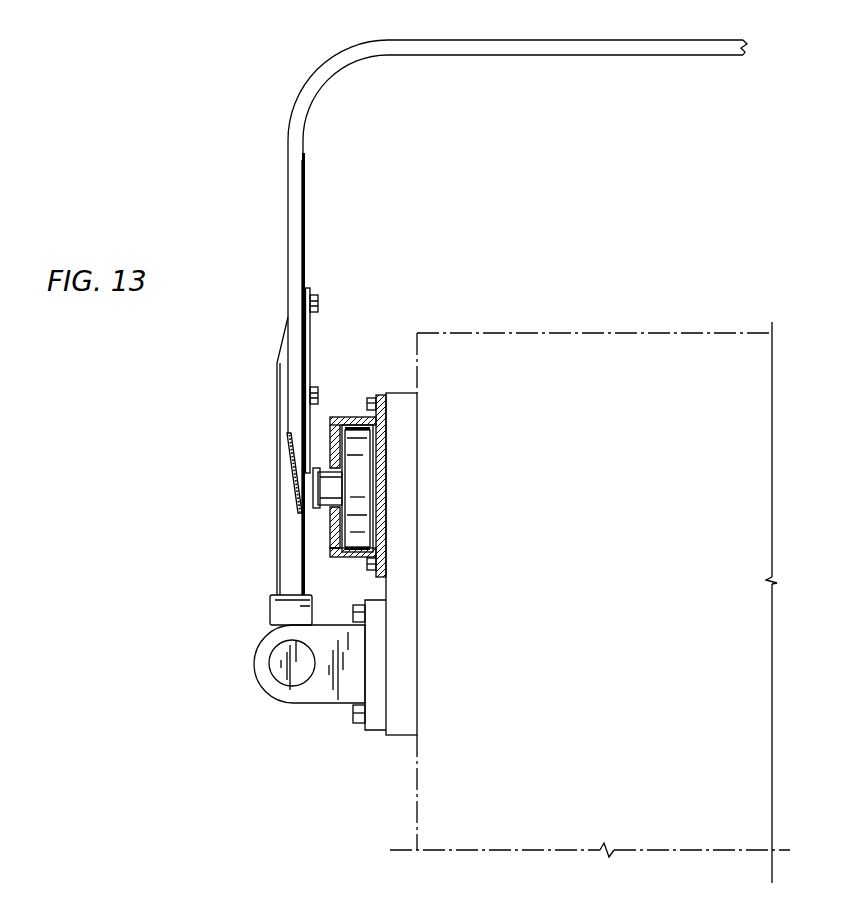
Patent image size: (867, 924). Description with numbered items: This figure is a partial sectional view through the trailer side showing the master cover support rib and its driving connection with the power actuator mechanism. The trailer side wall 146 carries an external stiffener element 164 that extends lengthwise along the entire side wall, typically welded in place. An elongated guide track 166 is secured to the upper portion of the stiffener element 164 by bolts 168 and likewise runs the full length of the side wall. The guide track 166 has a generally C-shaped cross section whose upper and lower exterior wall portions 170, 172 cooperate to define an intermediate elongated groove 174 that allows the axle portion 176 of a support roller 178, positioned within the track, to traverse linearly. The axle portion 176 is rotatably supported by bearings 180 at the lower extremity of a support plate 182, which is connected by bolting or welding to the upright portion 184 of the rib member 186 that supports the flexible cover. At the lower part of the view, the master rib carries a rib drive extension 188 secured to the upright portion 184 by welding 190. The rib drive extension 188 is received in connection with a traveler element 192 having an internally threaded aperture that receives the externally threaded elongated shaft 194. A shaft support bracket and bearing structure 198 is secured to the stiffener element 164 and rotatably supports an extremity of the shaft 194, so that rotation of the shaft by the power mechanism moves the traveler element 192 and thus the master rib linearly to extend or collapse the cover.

The side wall 146 is at (417, 802).
The stiffener element 164 is at (400, 392).
The guide track 166 is at (343, 416).
The bolts 168 is at (370, 397).
The upper exterior wall portion 170 is at (332, 450).
The lower exterior wall portion 172 is at (332, 527).
The elongated groove 174 is at (308, 514).
The axle portion 176 is at (332, 486).
The support rollers 178 is at (355, 532).
The bearings 180 is at (358, 495).
The support plate 182 is at (307, 354).
The upright portion 184 is at (292, 263).
The rib member 186 is at (293, 117).
The rib drive extension 188 is at (282, 563).
The welding 190 is at (290, 452).
The traveler element 192 is at (280, 613).
The elongated shaft 194 is at (282, 672).
The shaft support bracket and bearing structure 198 is at (337, 692).